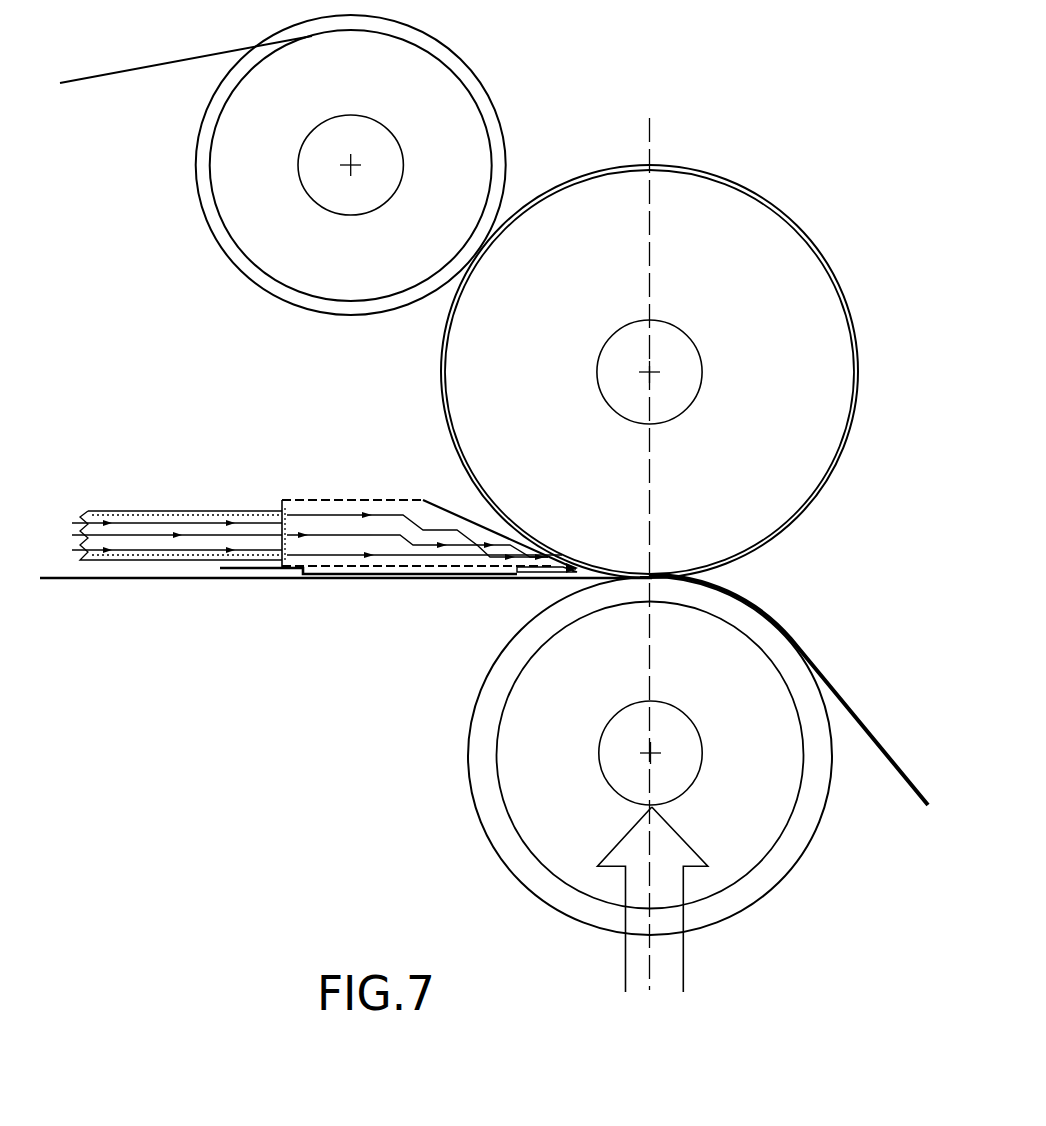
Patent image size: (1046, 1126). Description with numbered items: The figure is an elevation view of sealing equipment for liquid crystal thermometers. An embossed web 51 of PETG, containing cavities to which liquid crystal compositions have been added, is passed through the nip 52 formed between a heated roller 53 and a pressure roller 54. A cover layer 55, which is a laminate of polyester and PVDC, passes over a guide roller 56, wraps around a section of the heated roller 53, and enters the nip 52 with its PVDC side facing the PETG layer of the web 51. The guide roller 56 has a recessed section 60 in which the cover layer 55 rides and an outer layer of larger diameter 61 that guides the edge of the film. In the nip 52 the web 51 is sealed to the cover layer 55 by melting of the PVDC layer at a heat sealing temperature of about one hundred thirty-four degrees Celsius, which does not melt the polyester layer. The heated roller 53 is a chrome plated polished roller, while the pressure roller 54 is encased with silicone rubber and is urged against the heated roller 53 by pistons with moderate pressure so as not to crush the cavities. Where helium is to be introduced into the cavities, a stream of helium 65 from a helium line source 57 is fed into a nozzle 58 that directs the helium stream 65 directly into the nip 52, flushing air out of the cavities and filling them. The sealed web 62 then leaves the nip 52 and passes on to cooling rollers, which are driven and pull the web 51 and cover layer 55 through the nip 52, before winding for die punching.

The embossed web 51 is at (187, 580).
The nip 52 is at (705, 572).
The heated roller 53 is at (508, 372).
The pressure roller 54 is at (538, 757).
The cover layer 55 is at (130, 70).
The guide roller 56 is at (270, 163).
The helium line source 57 is at (115, 511).
The nozzle 58 is at (370, 498).
The recessed section 60 is at (452, 67).
The outer layer larger diameter 61 is at (246, 264).
The sealed web 62 is at (902, 772).
The stream of helium 65 is at (567, 574).